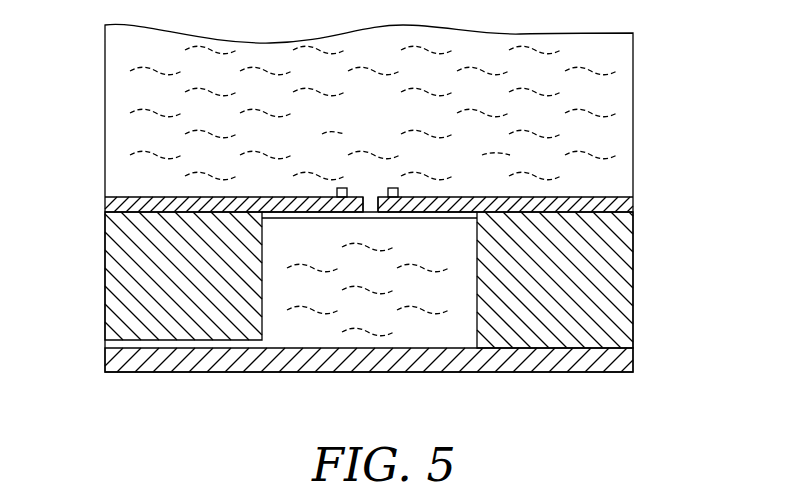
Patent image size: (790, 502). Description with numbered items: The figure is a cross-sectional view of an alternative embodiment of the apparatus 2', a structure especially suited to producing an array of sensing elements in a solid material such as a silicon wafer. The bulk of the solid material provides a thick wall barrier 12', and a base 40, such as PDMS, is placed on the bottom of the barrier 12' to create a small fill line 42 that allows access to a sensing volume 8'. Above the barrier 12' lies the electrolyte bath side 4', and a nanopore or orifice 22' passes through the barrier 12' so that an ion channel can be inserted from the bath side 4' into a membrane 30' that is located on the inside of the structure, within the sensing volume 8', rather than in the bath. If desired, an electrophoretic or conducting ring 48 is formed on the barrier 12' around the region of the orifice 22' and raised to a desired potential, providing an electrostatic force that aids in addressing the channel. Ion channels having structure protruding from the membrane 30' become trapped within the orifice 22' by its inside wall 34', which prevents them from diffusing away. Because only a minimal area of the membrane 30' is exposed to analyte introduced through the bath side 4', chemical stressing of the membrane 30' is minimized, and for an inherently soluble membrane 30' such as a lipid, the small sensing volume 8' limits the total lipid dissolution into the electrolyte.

The apparatus 2' is at (429, 198).
The bath side 4' is at (373, 113).
The orifice 22' is at (237, 169).
The conducting ring 48 is at (400, 184).
The membrane 30' is at (403, 229).
The inside wall 34' is at (369, 235).
The fill line 42 is at (110, 344).
The barrier 12' is at (599, 280).
The base 40 is at (618, 360).
The sensing volume 8' is at (362, 330).